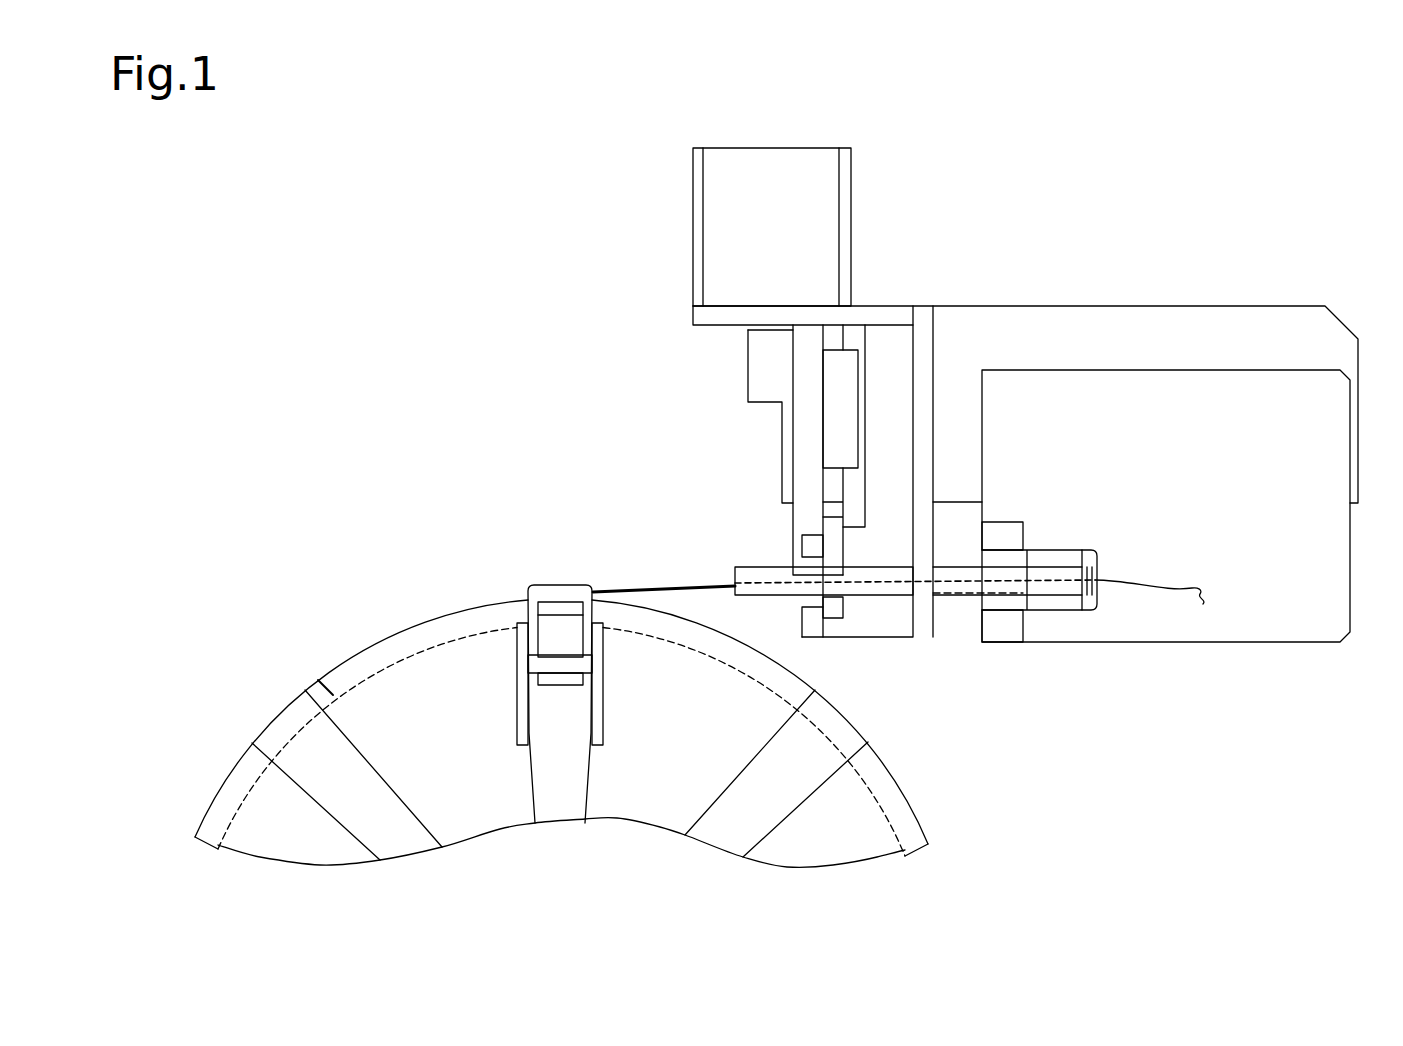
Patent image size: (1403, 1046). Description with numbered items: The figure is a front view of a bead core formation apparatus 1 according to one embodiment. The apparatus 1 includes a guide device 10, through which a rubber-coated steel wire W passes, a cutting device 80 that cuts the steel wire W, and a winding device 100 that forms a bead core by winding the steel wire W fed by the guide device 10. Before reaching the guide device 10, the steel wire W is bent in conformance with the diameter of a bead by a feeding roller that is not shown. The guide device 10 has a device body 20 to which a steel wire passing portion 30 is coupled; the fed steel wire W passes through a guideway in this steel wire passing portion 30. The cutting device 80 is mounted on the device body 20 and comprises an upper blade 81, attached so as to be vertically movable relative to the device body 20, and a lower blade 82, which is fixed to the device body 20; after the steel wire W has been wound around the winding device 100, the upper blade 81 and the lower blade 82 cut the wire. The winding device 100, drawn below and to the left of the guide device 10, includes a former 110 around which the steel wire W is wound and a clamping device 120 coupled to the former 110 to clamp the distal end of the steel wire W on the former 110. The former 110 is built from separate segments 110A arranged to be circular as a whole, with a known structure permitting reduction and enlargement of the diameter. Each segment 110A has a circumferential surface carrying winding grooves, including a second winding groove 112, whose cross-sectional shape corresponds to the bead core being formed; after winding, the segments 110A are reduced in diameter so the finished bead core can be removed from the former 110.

The bead core formation apparatus 1 is at (1369, 246).
The guide device 10 is at (1089, 497).
The device body 20 is at (1043, 306).
The steel wire passing portion 30 is at (955, 598).
The cutting device 80 is at (799, 454).
The upper blade 81 is at (808, 546).
The lower blade 82 is at (838, 608).
The winding device 100 is at (341, 486).
The former 110 is at (437, 612).
The segments 110A is at (235, 777).
The second winding groove 112 is at (318, 676).
The clamping device 120 is at (556, 585).
The steel wire W is at (651, 590).